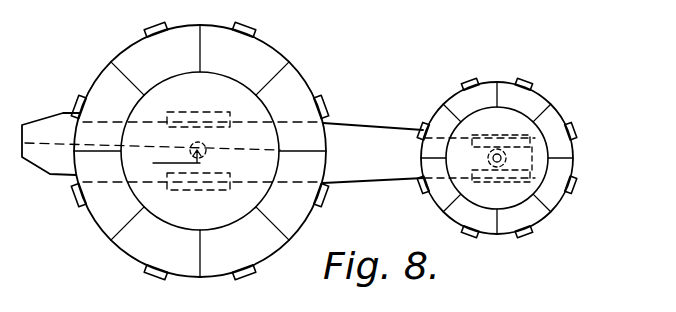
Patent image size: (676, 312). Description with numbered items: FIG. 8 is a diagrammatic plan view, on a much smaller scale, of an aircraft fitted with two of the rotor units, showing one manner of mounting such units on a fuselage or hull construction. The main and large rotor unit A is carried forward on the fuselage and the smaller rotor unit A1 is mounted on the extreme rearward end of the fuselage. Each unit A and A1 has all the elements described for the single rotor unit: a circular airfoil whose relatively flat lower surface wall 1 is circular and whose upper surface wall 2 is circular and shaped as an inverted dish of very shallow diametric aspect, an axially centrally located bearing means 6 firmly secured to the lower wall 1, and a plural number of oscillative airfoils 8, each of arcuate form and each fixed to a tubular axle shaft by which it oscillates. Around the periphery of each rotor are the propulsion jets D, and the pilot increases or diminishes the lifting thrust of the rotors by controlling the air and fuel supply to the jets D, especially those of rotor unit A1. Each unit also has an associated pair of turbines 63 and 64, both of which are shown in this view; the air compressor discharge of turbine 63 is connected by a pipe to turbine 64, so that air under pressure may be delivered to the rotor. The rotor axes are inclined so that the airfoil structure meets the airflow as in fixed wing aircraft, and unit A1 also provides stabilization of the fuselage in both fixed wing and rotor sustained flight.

The lower surface wall 1 is at (41, 192).
The upper surface wall 2 is at (334, 151).
The bearing means 6 is at (207, 153).
The oscillative airfoils 8 is at (323, 151).
The turbine 63 is at (175, 112).
The turbine 64 is at (180, 190).
The rotor A is at (96, 67).
The rotor unit A1 is at (567, 205).
The propulsion jets D is at (317, 148).